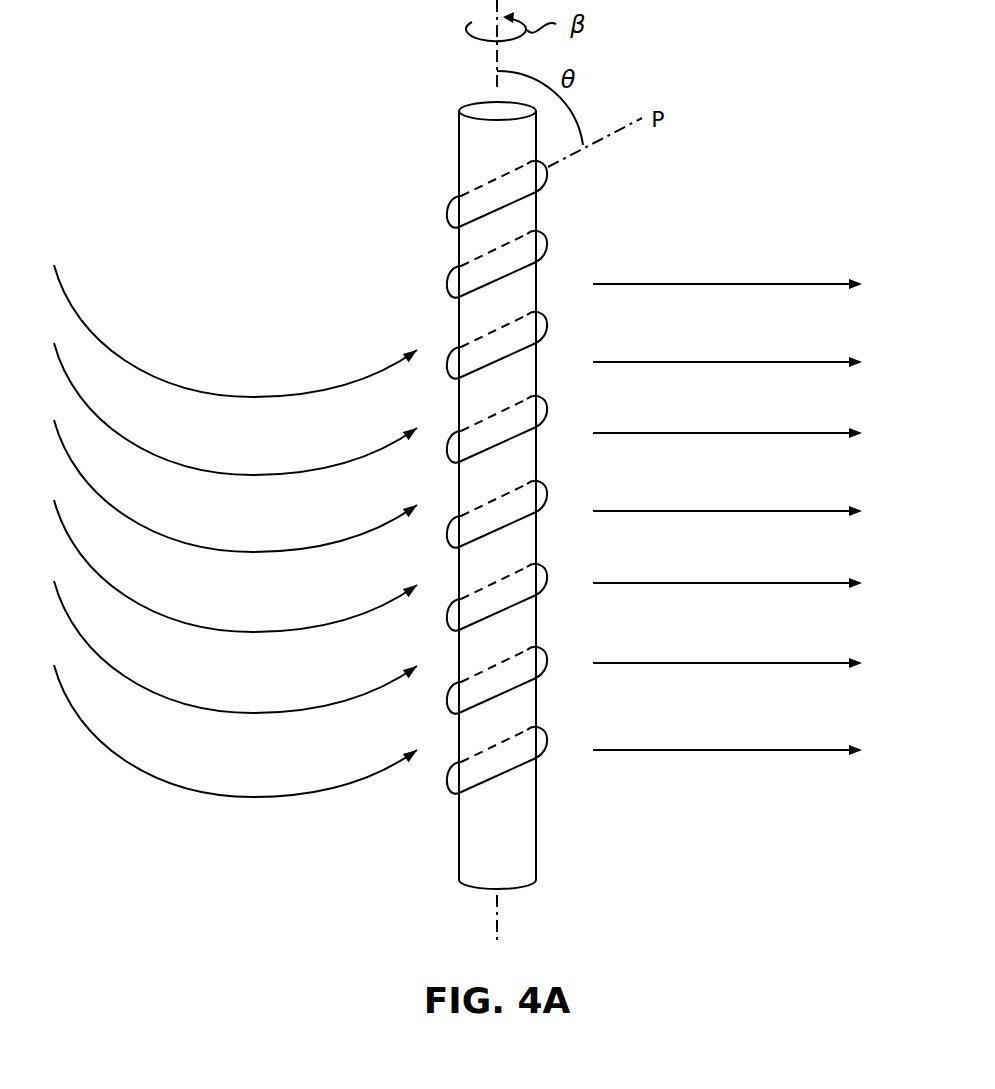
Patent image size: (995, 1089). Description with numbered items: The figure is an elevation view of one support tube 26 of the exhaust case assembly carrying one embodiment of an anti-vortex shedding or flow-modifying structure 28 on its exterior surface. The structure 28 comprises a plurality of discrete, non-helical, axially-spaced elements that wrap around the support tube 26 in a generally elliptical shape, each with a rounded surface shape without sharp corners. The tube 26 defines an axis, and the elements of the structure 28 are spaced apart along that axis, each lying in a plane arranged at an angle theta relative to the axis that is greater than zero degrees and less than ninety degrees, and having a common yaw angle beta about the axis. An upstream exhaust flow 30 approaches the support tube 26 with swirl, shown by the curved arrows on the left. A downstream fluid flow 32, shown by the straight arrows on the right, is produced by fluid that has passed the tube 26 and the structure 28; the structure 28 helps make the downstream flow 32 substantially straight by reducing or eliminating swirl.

The support tube 26 is at (536, 835).
The anti-vortex shedding structure 28 is at (450, 210).
The upstream exhaust flow 30 is at (243, 798).
The downstream fluid flow 32 is at (723, 750).